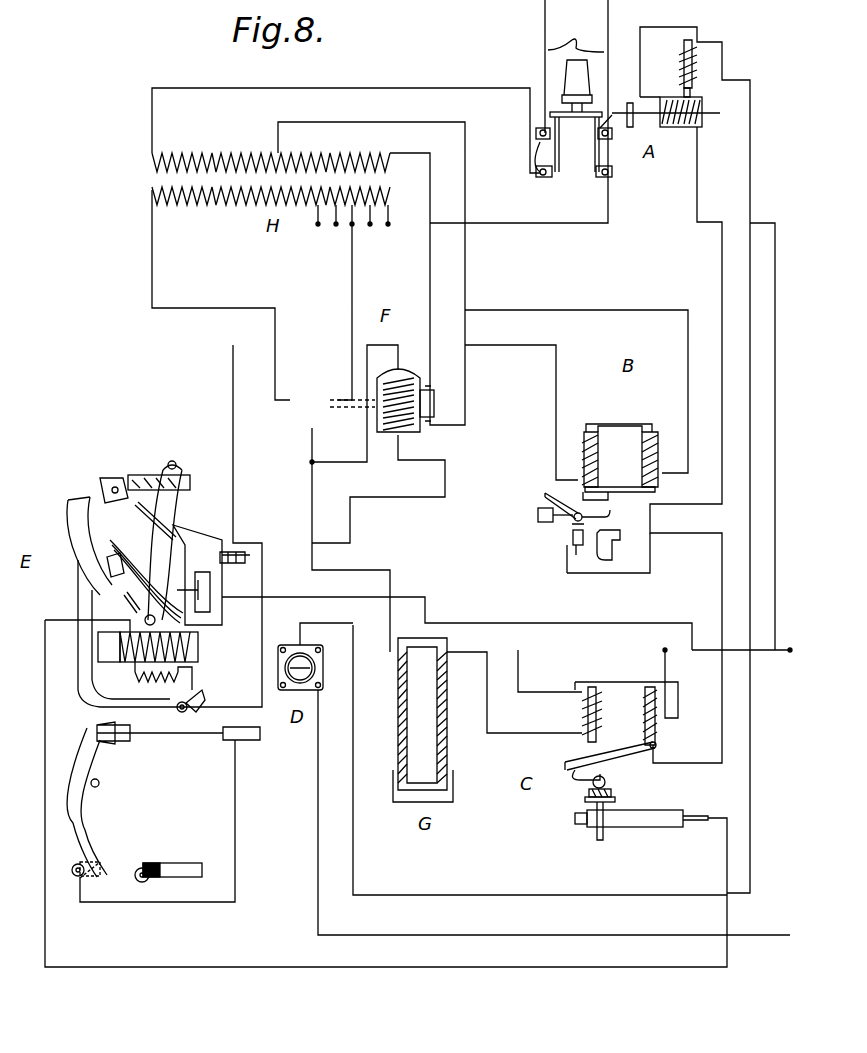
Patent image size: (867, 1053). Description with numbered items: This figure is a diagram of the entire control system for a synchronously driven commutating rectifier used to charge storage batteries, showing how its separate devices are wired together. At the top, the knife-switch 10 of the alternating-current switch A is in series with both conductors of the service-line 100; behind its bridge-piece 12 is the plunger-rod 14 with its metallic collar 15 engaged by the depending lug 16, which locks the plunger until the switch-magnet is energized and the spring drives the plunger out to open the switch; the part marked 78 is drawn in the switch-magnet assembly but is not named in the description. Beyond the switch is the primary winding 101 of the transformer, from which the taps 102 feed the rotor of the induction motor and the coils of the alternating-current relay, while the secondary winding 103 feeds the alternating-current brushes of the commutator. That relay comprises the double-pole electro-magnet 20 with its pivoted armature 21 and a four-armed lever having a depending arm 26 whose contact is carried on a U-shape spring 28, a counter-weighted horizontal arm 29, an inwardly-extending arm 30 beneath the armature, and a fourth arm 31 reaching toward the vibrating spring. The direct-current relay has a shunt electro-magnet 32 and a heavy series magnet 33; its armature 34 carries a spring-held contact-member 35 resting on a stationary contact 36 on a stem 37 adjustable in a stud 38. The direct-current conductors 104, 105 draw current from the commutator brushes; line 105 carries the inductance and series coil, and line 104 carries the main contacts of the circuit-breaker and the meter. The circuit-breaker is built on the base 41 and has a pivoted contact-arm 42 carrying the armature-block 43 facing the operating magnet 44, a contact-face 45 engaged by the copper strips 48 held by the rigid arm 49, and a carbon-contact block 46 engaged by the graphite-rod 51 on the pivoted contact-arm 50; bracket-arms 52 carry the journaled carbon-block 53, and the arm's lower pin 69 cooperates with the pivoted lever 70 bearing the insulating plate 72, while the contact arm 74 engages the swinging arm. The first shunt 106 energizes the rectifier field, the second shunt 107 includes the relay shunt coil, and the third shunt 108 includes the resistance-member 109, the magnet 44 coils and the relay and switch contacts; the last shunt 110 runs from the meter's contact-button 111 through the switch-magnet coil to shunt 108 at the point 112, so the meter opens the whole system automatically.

The knife-switch 10 is at (596, 168).
The bridge-piece 12 is at (577, 118).
The plunger-rod 14 is at (606, 138).
The metallic collar 15 is at (678, 127).
The depending lug 16 is at (640, 105).
The double-pole electro-magnet 20 is at (648, 420).
The armature 21 is at (621, 487).
The depending arm 26 is at (570, 548).
The U-shape spring 28 is at (597, 555).
The outwardly-extending horizontal arm 29 is at (556, 522).
The inwardly-extending horizontal arm 30 is at (612, 508).
The fourth arm 31 is at (553, 497).
The shunt electro-magnet 32 is at (645, 695).
The series magnet 33 is at (580, 713).
The armature 34 is at (570, 765).
The spring-held contact-member 35 is at (608, 782).
The stationary contact 36 is at (615, 799).
The stem 37 is at (596, 832).
The stud 38 is at (641, 820).
The circuit-breaker base 41 is at (198, 703).
The contact-arm 42 is at (80, 525).
The armature-block 43 is at (98, 650).
The operating magnet 44 is at (198, 643).
The contact-face 45 is at (107, 565).
The carbon-contact block 46 is at (114, 477).
The copper strips 48 is at (143, 595).
The rigid arm 49 is at (125, 595).
The pivoted contact-arm 50 is at (180, 505).
The graphite-rod 51 is at (146, 475).
The bracket-arms 52 is at (168, 535).
The carbon-block 53 is at (78, 497).
The laterally-projecting pin 69 is at (148, 882).
The pivoted lever 70 is at (85, 878).
The insulating plate 72 is at (144, 862).
The contact arm 74 is at (198, 585).
The plunger 78 is at (680, 95).
The alternating-current service-line 100 is at (576, 89).
The primary winding 101 is at (207, 158).
The taps 102 is at (430, 368).
The secondary winding 103 is at (207, 205).
The conductor 104 is at (233, 445).
The conductor 105 is at (312, 448).
The first shunt 106 is at (322, 530).
The second shunt 107 is at (665, 650).
The third shunt 108 is at (712, 148).
The resistance-member 109 is at (146, 676).
The meter shunt 110 is at (660, 55).
The contact-button 111 is at (298, 660).
The connection point 112 is at (698, 44).